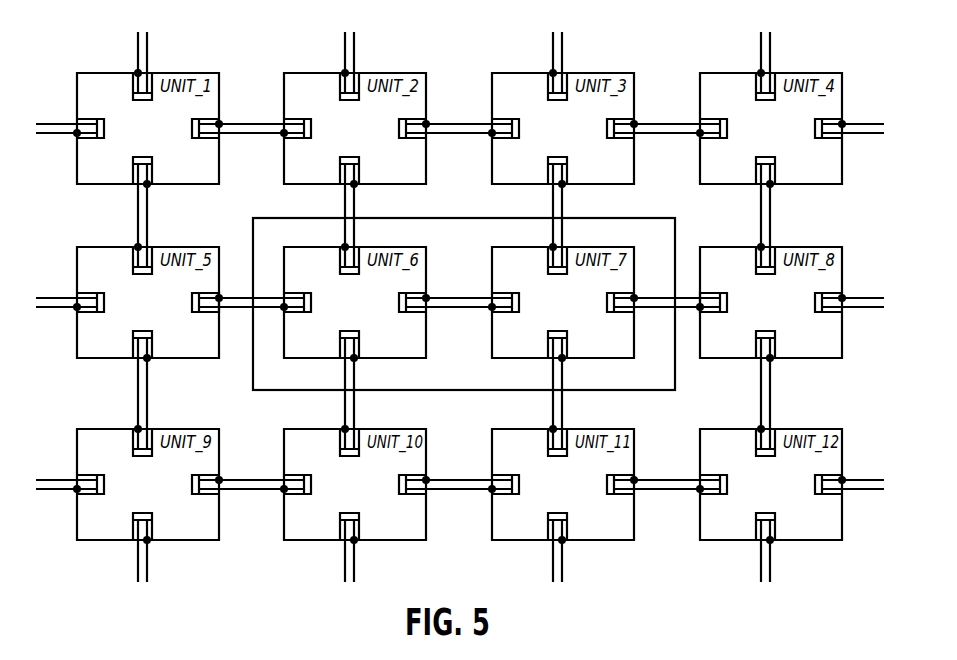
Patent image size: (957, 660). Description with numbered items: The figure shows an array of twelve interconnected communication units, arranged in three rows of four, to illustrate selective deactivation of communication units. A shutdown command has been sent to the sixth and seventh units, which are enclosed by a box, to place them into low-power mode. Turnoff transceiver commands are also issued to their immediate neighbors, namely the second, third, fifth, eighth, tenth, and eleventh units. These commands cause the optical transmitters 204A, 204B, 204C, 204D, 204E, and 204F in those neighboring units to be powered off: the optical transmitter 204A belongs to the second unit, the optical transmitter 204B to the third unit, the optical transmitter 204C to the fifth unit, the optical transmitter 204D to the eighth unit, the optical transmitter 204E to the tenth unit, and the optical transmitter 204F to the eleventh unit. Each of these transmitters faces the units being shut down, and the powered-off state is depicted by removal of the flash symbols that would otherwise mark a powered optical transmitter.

The optical transmitter 204A is at (347, 172).
The optical transmitter 204B is at (551, 172).
The optical transmitter 204C is at (208, 312).
The optical transmitter 204D is at (710, 312).
The optical transmitter 204E is at (342, 445).
The optical transmitter 204F is at (550, 440).